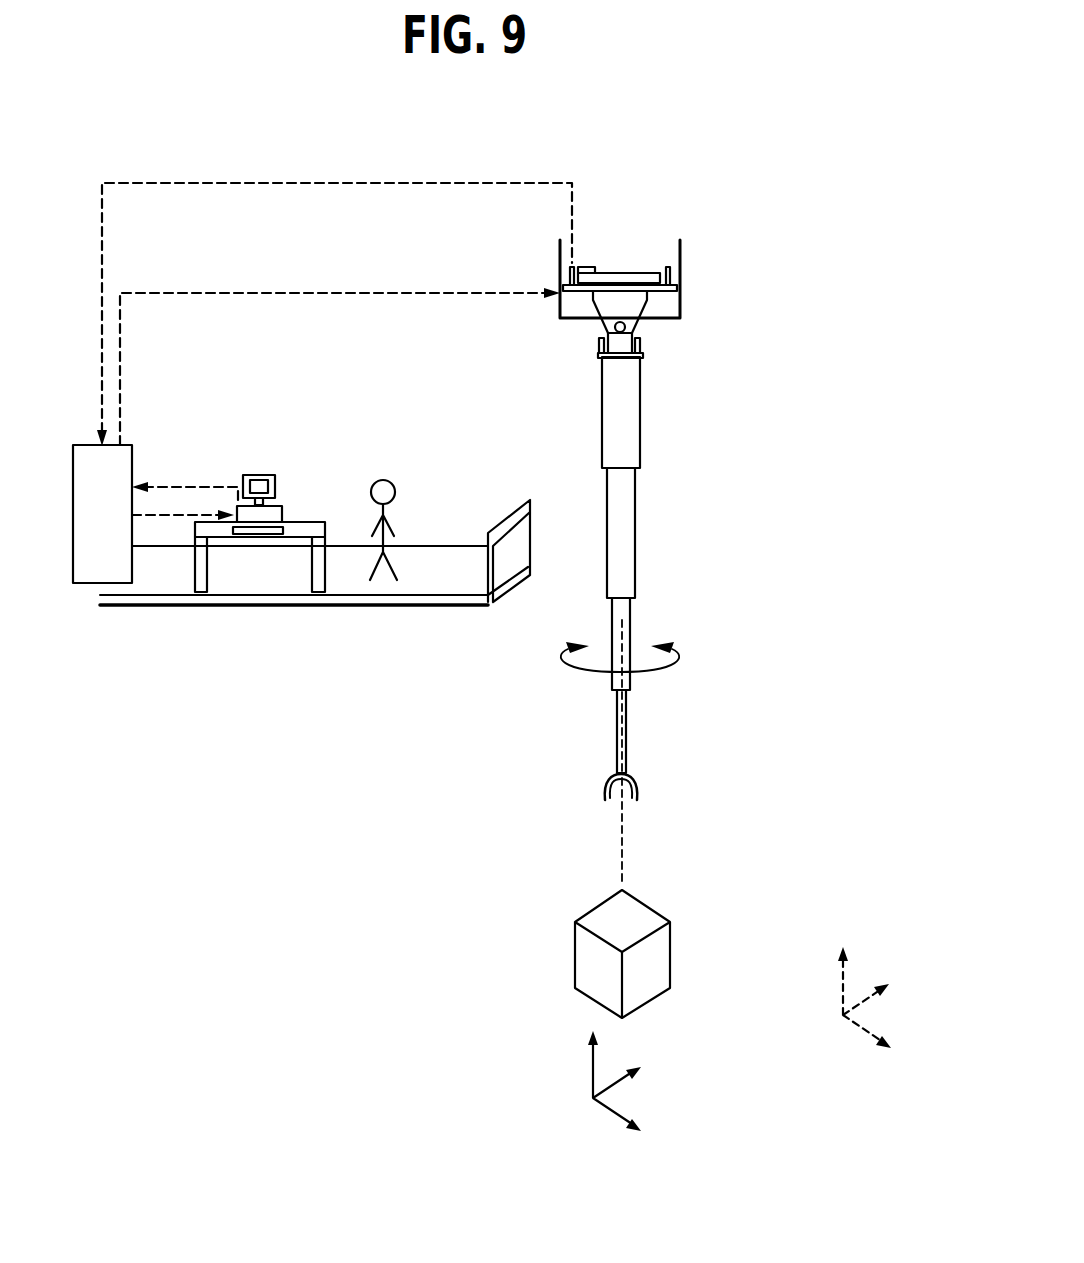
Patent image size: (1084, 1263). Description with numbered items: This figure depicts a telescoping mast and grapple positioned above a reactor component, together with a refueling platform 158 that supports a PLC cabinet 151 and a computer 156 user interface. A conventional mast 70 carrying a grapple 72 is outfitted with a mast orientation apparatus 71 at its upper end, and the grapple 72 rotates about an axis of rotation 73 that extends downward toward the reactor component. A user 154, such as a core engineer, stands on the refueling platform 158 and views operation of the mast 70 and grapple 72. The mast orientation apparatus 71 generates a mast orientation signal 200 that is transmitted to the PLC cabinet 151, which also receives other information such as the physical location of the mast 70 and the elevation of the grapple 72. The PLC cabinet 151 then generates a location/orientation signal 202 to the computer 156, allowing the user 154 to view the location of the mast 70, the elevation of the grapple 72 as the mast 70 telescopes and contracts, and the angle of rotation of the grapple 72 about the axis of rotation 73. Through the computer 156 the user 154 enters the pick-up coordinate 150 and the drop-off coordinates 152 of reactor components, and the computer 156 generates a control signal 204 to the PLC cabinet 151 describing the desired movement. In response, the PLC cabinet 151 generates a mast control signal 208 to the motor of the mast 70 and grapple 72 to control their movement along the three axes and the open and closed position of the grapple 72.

The mast orientation signal 200 is at (462, 176).
The mast control signal 208 is at (418, 284).
The mast orientation apparatus 71 is at (707, 225).
The mast 70 is at (636, 572).
The grapple 72 is at (640, 790).
The axis of rotation 73 is at (622, 855).
The pick-up coordinate 150 is at (548, 1075).
The drop-off coordinates 152 is at (808, 1010).
The PLC cabinet 151 is at (132, 449).
The control signal 204 is at (197, 487).
The location/orientation signal 202 is at (160, 515).
The computer 156 is at (262, 475).
The user 154 is at (387, 481).
The refueling platform 158 is at (178, 583).